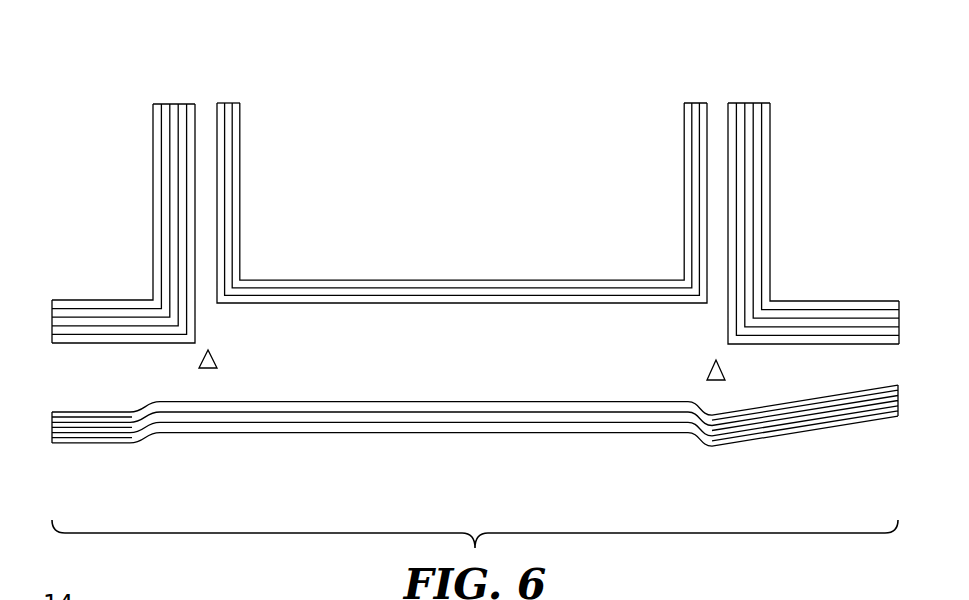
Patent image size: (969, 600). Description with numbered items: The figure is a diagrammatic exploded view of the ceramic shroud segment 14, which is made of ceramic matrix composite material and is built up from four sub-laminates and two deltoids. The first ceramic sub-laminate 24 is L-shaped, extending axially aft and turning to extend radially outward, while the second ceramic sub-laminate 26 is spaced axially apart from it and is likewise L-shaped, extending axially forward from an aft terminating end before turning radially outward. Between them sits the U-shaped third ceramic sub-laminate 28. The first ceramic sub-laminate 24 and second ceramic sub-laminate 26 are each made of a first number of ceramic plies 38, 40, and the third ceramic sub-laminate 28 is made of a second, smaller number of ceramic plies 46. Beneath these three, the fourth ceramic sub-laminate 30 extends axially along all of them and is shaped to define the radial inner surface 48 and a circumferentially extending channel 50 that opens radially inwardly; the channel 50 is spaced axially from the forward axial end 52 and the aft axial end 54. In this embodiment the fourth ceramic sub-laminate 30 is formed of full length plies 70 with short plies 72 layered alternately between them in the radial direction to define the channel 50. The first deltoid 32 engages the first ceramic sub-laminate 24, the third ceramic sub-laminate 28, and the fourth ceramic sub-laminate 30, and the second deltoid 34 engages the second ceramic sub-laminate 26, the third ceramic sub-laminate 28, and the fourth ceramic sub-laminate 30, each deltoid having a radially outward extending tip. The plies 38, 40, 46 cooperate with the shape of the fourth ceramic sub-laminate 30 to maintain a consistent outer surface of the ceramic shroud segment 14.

The ceramic shroud segment 14 is at (108, 78).
The first ceramic sub-laminate 24 is at (129, 193).
The second ceramic sub-laminate 26 is at (813, 194).
The third ceramic sub-laminate 28 is at (462, 173).
The fourth ceramic sub-laminate 30 is at (476, 454).
The first deltoid 32 is at (178, 360).
The second deltoid 34 is at (744, 364).
The ceramic plies 38 is at (173, 116).
The ceramic plies 40 is at (750, 116).
The ceramic plies 46 is at (233, 116).
The radial inner surface 48 is at (482, 432).
The circumferentially extending channel 50 is at (381, 445).
The forward axial end 52 is at (52, 430).
The aft axial end 54 is at (898, 398).
The full length plies 70 is at (188, 433).
The short plies 72 is at (108, 433).